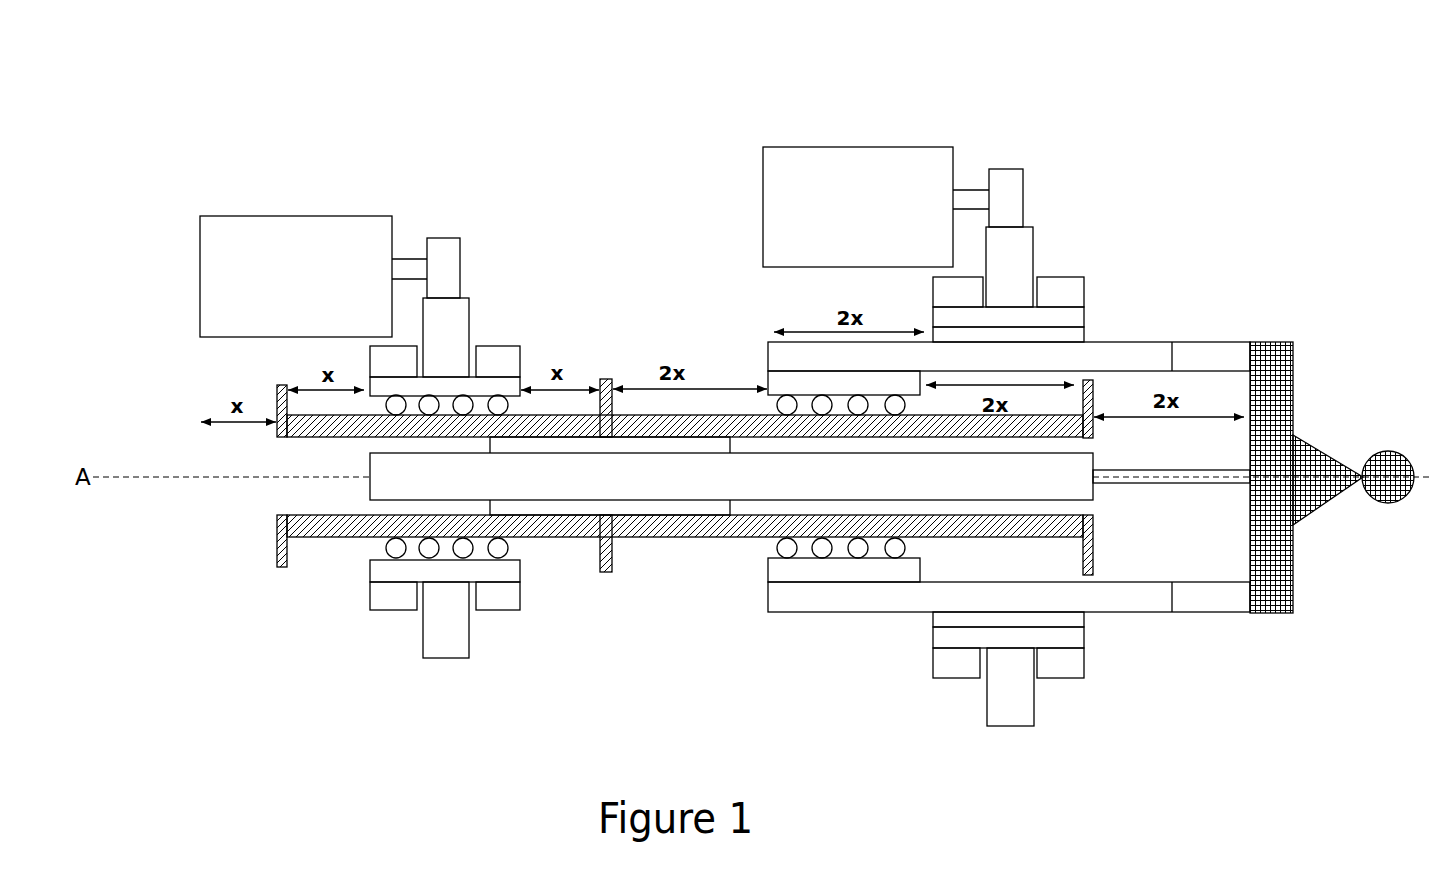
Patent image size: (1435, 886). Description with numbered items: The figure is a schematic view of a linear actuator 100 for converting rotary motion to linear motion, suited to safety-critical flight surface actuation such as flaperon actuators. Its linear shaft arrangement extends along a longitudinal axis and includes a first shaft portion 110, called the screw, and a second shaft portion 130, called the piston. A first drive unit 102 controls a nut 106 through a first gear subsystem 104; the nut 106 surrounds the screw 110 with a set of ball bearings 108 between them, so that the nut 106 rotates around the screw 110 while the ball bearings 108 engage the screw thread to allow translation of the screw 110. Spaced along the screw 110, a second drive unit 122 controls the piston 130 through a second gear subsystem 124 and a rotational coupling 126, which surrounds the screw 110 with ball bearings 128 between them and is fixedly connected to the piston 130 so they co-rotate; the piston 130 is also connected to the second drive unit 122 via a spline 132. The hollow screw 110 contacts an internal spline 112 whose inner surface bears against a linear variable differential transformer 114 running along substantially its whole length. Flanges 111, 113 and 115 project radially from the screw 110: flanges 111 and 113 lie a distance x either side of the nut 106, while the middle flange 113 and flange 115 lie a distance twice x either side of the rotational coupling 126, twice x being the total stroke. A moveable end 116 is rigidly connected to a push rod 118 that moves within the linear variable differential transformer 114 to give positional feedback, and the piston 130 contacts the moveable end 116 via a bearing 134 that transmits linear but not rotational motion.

The linear actuator 100 is at (145, 137).
The first drive unit 102 is at (297, 215).
The first gear subsystem 104 is at (472, 337).
The nut 106 is at (523, 387).
The ball bearings 108 is at (382, 547).
The first shaft portion 110 is at (327, 438).
The flange 111 is at (277, 385).
The spline 112 is at (370, 502).
The flange 113 is at (605, 578).
The linear variable differential transformer (LVDT) 114 is at (744, 492).
The flange 115 is at (1093, 545).
The moveable end 116 is at (1342, 457).
The push rod 118 is at (1200, 483).
The second drive unit 122 is at (858, 147).
The second gear subsystem 124 is at (1040, 267).
The rotational coupling 126 is at (768, 387).
The ball bearings 128 is at (773, 550).
The second shaft portion 130 is at (768, 342).
The spline 132 is at (1085, 335).
The bearing 134 is at (1210, 340).